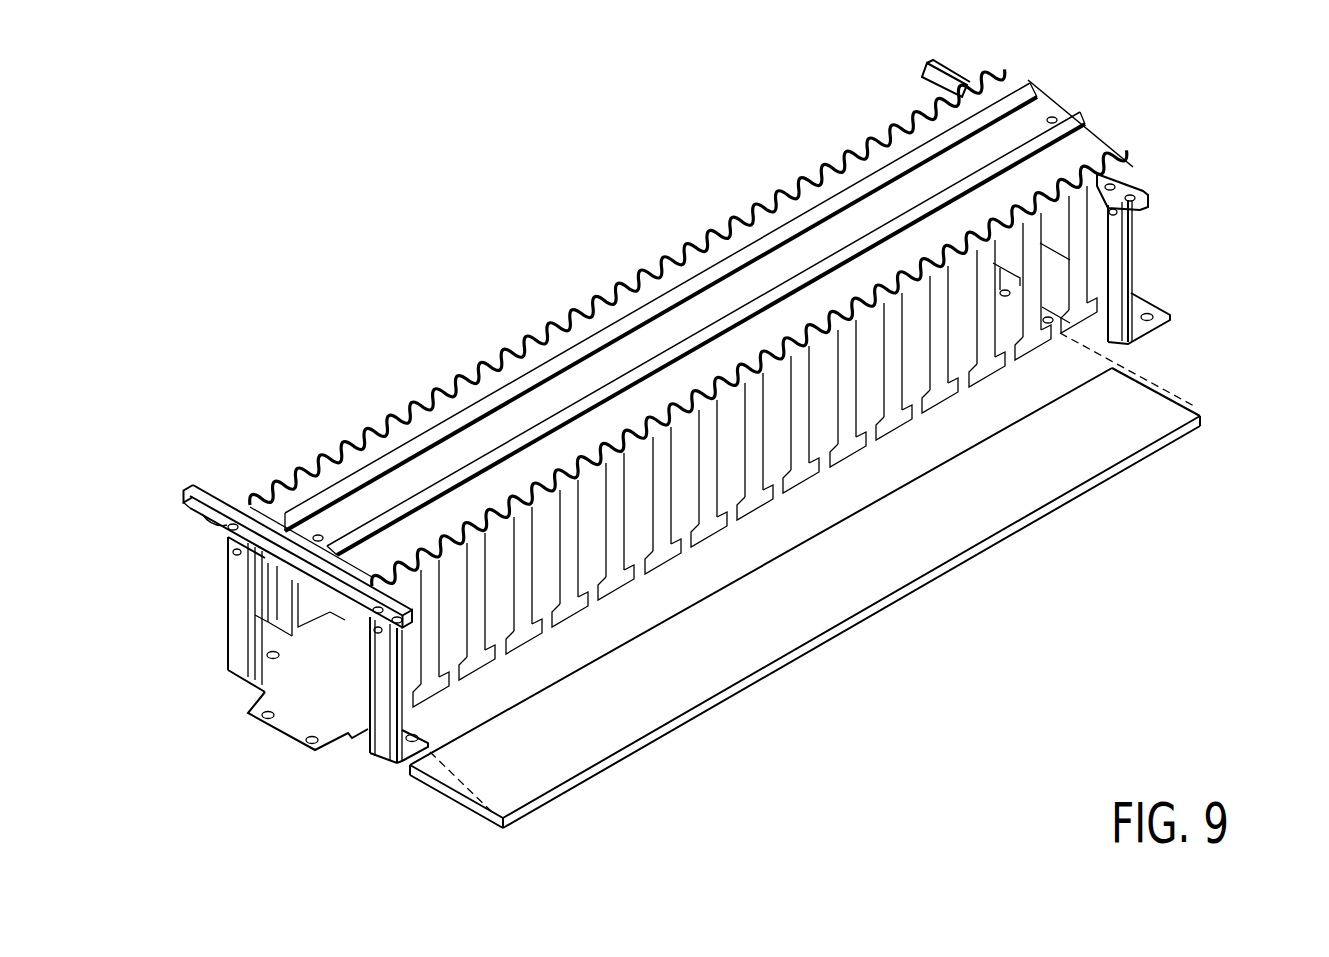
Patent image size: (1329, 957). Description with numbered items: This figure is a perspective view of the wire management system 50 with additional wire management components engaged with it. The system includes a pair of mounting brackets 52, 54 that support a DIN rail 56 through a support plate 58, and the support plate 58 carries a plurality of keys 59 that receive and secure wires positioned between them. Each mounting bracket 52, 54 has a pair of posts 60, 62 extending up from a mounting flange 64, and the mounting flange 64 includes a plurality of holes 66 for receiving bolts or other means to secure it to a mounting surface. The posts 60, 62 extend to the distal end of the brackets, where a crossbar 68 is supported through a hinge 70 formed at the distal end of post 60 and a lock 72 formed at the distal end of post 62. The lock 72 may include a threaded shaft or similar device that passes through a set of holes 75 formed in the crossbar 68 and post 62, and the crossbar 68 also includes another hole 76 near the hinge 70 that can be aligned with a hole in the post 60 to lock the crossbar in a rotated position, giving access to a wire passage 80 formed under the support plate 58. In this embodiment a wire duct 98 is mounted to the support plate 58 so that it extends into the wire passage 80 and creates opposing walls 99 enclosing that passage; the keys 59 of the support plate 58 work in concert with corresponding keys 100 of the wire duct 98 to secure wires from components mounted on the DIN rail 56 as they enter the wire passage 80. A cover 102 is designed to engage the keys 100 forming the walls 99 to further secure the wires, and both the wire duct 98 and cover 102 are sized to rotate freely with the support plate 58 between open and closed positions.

The wire management system 50 is at (1135, 73).
The mounting bracket 52 is at (194, 627).
The mounting bracket 54 is at (1186, 269).
The DIN rail 56 is at (666, 344).
The support plate 58 is at (1100, 150).
The keys 59 is at (769, 184).
The post 60 is at (1118, 292).
The post 62 is at (235, 598).
The mounting flange 64 is at (302, 711).
The holes 66 is at (275, 653).
The crossbar 68 is at (190, 504).
The hinge 70 is at (1148, 183).
The lock 72 is at (233, 480).
The holes 75 is at (227, 524).
The hole 76 is at (1145, 207).
The wire passage 80 is at (341, 672).
The wire duct 98 is at (712, 552).
The walls 99 is at (253, 637).
The keys 100 is at (909, 445).
The cover 102 is at (821, 586).